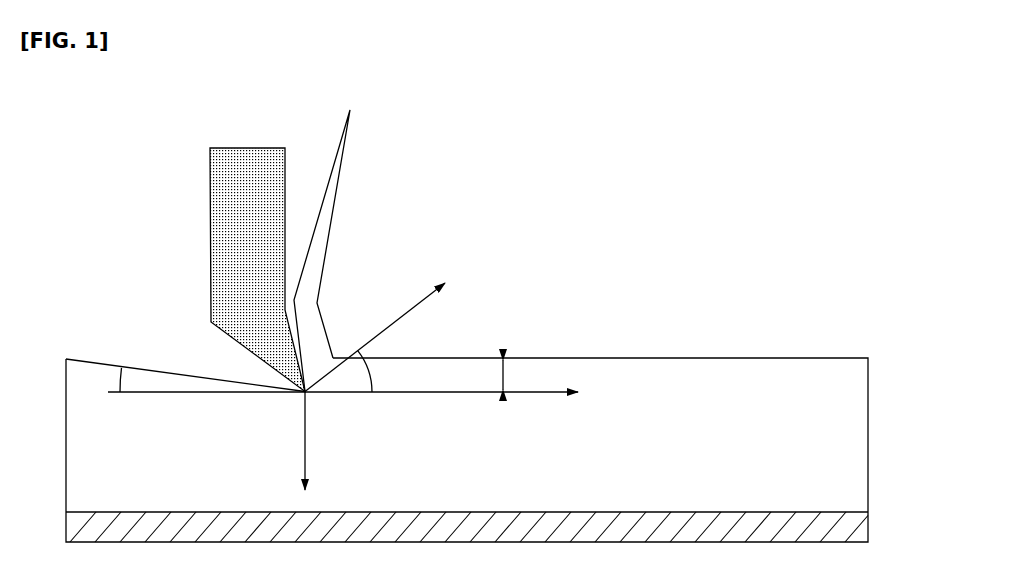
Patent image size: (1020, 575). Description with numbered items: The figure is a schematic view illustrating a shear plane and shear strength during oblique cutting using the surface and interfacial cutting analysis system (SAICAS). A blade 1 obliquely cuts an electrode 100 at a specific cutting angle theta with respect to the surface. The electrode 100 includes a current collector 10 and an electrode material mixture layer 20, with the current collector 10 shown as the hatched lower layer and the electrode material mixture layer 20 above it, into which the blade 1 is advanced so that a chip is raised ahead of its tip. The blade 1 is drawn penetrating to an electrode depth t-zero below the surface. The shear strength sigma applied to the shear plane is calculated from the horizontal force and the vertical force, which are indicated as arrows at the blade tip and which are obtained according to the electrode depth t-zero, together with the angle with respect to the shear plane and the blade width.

The blade 1 is at (217, 203).
The current collector 10 is at (855, 526).
The electrode material mixture layer 20 is at (853, 436).
The electrode 100 is at (642, 154).